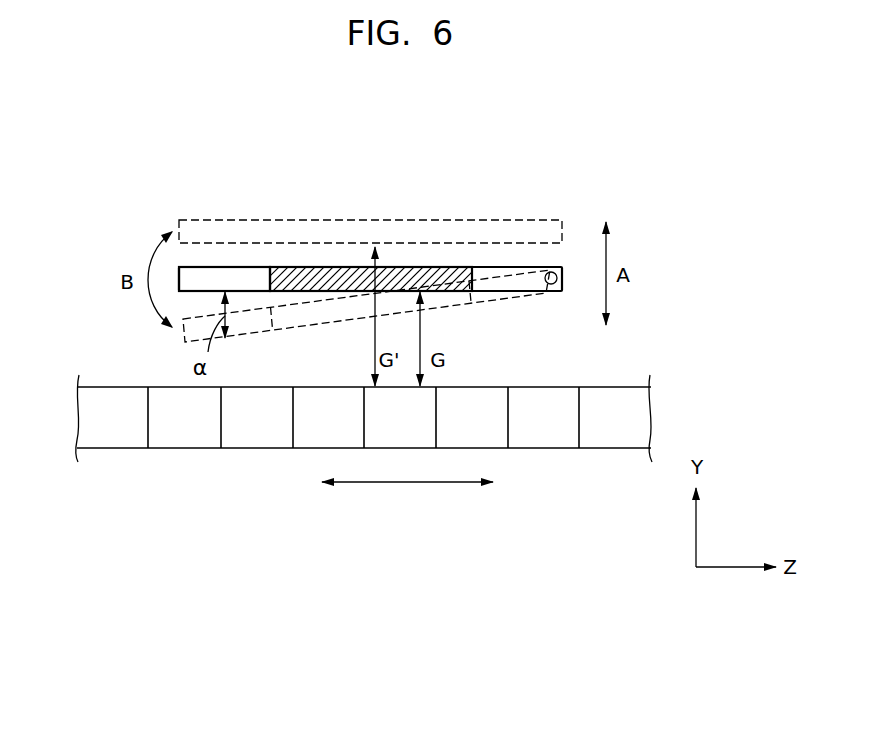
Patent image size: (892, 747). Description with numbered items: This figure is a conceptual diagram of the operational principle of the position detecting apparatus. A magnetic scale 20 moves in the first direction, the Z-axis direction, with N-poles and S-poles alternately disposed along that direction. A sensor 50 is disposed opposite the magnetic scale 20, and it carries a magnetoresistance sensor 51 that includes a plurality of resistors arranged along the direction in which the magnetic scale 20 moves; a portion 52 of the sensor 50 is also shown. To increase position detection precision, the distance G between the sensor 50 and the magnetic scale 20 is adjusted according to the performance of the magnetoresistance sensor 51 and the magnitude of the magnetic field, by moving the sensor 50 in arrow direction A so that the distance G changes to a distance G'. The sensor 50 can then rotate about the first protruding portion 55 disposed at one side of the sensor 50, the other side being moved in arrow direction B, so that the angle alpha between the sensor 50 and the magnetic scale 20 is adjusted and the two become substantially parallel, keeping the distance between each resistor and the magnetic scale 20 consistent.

The magnetic scale 20 is at (575, 379).
The sensor 50 is at (370, 250).
The magnetoresistance sensor 51 is at (337, 272).
The mover body portion 52 is at (250, 277).
The first protruding portion 55 is at (551, 272).